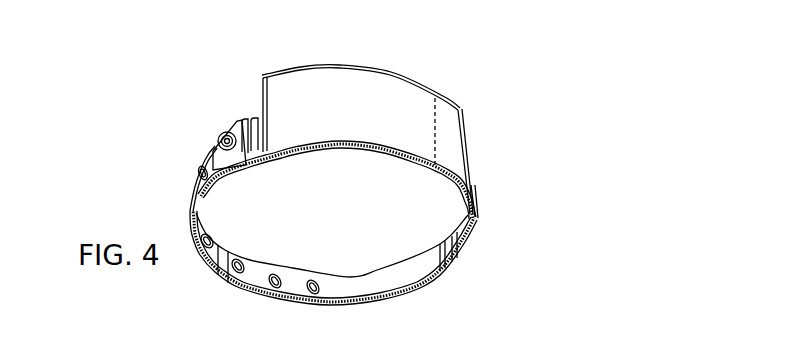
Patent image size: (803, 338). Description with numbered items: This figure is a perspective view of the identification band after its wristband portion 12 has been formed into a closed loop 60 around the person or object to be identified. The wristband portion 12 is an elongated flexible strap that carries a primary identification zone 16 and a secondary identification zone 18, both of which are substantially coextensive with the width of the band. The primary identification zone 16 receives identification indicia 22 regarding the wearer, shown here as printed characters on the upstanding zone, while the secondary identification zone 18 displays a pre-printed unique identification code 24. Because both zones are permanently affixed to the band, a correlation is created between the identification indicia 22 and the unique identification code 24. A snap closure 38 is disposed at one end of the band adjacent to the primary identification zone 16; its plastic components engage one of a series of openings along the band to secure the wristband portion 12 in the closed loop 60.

The wristband portion 12 is at (355, 175).
The primary identification zone 16 is at (383, 88).
The secondary identification zone 18 is at (440, 101).
The identification indicia 22 is at (312, 112).
The unique identification code 24 is at (451, 137).
The snap closure 38 is at (222, 138).
The closed loop 60 is at (492, 254).